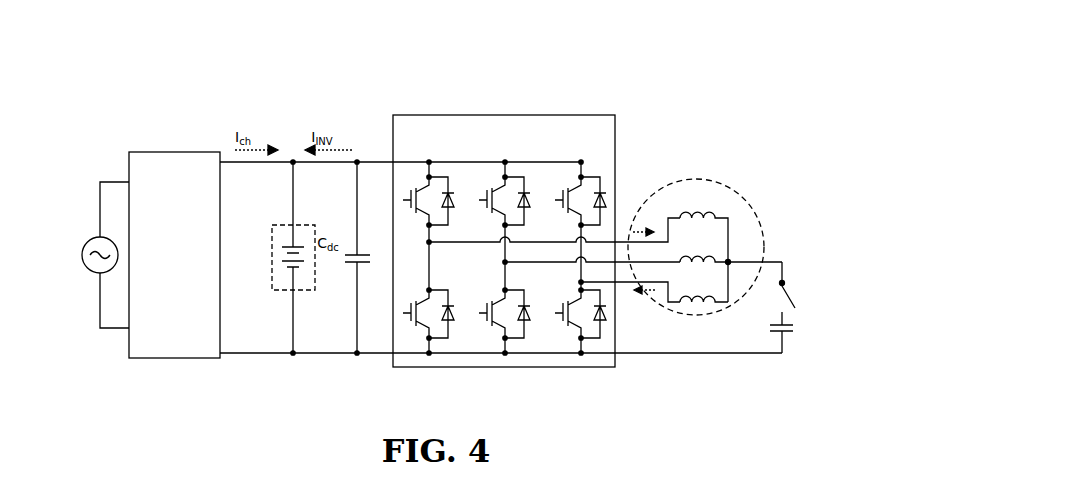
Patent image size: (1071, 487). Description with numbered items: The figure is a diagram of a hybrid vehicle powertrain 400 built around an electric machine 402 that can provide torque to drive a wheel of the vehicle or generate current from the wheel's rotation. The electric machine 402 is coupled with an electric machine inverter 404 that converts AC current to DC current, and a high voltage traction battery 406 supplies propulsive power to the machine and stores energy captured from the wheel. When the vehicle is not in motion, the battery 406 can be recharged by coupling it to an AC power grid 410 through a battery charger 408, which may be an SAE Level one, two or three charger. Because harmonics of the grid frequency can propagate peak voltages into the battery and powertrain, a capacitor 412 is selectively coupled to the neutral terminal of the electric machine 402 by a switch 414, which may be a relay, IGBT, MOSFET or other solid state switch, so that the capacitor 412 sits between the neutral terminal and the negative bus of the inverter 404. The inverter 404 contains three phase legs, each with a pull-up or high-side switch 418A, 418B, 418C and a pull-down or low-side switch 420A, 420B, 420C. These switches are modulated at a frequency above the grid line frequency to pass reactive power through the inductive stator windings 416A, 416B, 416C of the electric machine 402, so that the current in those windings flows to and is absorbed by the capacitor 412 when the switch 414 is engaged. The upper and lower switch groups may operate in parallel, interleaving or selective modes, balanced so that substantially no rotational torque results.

The hybrid vehicle powertrain 400 is at (680, 55).
The electric machine 402 is at (748, 197).
The electric machine inverter 404 is at (518, 115).
The high voltage traction battery 406 is at (285, 225).
The battery charger 408 is at (202, 150).
The AC power grid 410 is at (84, 244).
The capacitor C1 412 is at (790, 340).
The switch R1 414 is at (787, 300).
The inductive winding 416A is at (678, 217).
The inductive winding 416B is at (712, 258).
The inductive winding 416C is at (707, 305).
The pull-up switch 418A is at (423, 188).
The pull-up switch 418B is at (498, 188).
The pull-up switch 418C is at (575, 188).
The pull-down switch 420A is at (425, 330).
The pull-down switch 420B is at (501, 330).
The pull-down switch 420C is at (577, 330).